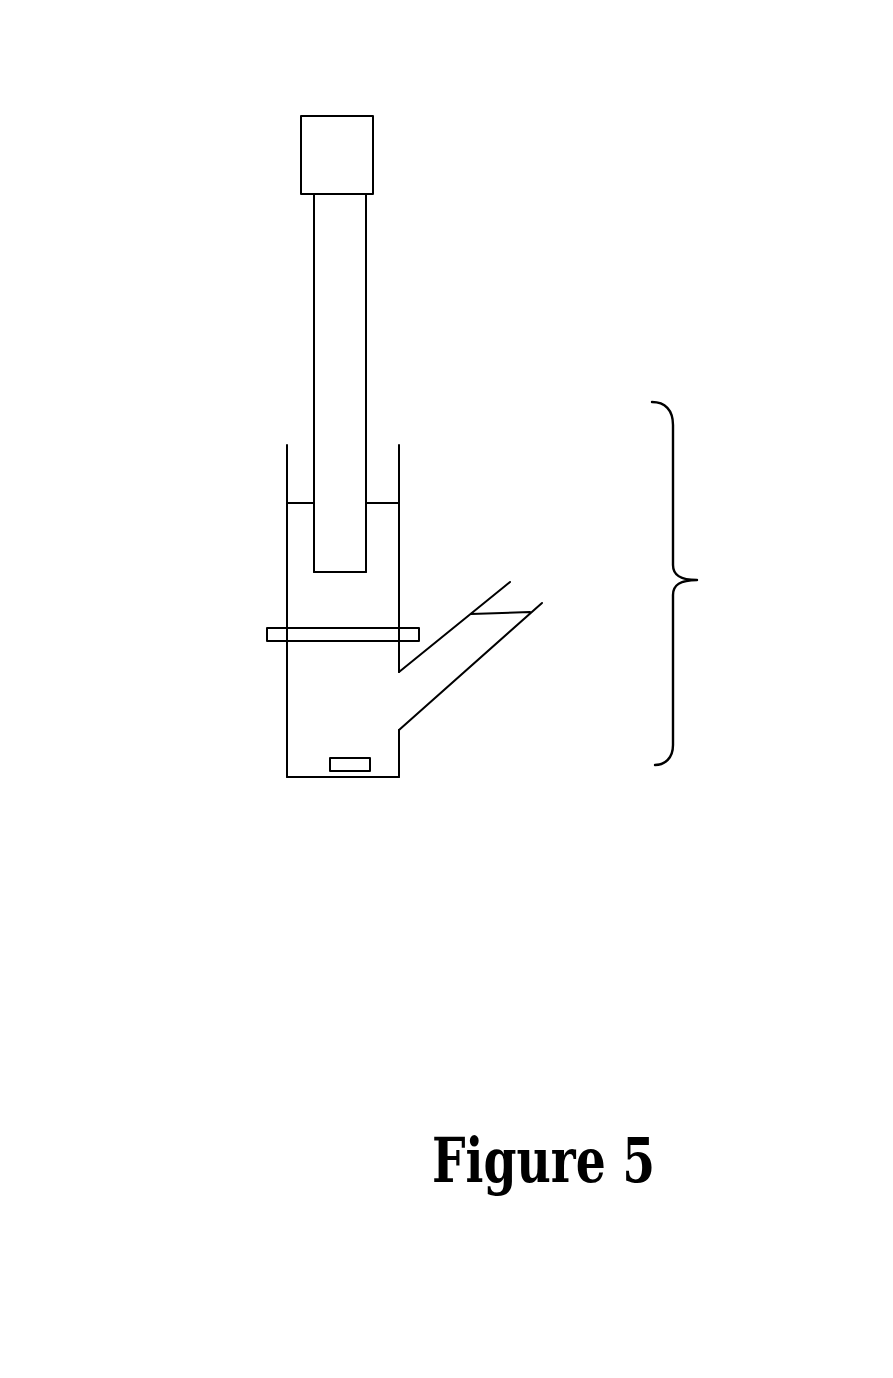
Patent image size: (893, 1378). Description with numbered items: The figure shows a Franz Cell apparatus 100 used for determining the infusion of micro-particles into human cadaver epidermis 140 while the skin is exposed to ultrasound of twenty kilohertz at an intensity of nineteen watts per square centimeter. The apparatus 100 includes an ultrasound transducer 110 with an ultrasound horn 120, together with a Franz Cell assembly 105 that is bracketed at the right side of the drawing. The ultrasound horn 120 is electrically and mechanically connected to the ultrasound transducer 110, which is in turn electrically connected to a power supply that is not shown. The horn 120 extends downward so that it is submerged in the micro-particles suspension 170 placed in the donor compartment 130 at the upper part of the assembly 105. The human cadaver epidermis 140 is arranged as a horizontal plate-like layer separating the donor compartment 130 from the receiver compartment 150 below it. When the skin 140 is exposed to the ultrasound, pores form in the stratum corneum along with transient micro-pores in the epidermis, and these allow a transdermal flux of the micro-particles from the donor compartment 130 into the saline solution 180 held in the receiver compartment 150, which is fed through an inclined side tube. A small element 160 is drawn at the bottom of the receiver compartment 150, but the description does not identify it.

The Franz Cell apparatus 100 is at (481, 131).
The Franz Cell assembly 105 is at (699, 583).
The ultrasound transducer 110 is at (300, 152).
The ultrasound horn 120 is at (308, 275).
The donor compartment 130 is at (285, 530).
The human cadaver epidermis 140 is at (267, 633).
The receiver compartment 150 is at (290, 723).
The sensor element 160 is at (350, 763).
The micro-particles suspension 170 is at (380, 577).
The saline solution 180 is at (365, 720).